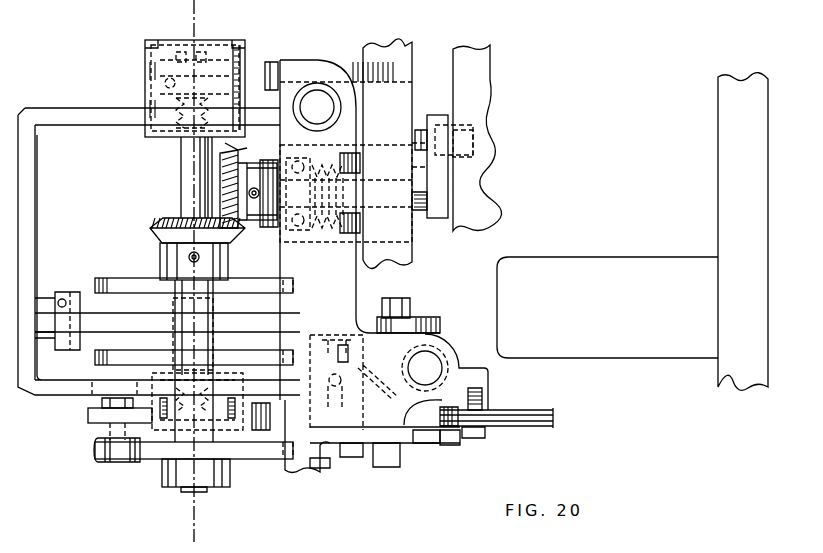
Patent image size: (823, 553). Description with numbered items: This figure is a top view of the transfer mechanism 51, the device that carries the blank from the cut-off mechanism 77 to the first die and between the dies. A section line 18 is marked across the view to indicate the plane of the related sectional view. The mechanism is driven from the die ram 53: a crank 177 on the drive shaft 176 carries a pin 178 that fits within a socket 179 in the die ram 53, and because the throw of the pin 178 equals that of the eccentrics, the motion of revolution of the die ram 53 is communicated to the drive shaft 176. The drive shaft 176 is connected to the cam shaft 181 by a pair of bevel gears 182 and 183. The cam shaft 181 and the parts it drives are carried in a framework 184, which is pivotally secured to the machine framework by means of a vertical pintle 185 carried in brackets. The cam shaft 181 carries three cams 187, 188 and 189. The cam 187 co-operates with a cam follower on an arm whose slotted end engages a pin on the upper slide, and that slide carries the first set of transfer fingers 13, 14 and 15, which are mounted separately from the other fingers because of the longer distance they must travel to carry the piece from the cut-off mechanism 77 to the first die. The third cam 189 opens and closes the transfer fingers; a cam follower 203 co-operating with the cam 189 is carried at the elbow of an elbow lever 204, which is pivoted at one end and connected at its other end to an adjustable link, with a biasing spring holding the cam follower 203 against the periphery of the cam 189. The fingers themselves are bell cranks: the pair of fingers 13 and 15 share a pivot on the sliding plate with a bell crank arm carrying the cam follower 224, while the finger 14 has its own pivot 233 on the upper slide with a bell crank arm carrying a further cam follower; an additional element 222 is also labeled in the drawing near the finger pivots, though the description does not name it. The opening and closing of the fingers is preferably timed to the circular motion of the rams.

The section line 18- 18 is at (182, 7).
The transfer mechanism 51 is at (97, 88).
The framework 184 is at (62, 113).
The cam shaft 181 is at (181, 178).
The bevel gear 183 is at (160, 244).
The bevel gear 182 is at (240, 229).
The vertical pintle 185 is at (313, 104).
The die ram 53 is at (462, 85).
The pin 178 is at (478, 127).
The socket 179 is at (470, 166).
The drive shaft 176 is at (418, 216).
The crank 177 is at (441, 212).
The cut-off mechanism 77 is at (630, 348).
The cam 187 is at (105, 280).
The cam 188 is at (95, 357).
The third cam 189 is at (152, 455).
The elbow lever 204 is at (88, 414).
The cam follower 203 is at (112, 452).
The cam follower 224 is at (449, 443).
The bracket 222 is at (462, 440).
The pivot 233 is at (493, 436).
The transfer finger 13 is at (553, 410).
The transfer finger 14 is at (553, 418).
The transfer finger 15 is at (553, 426).